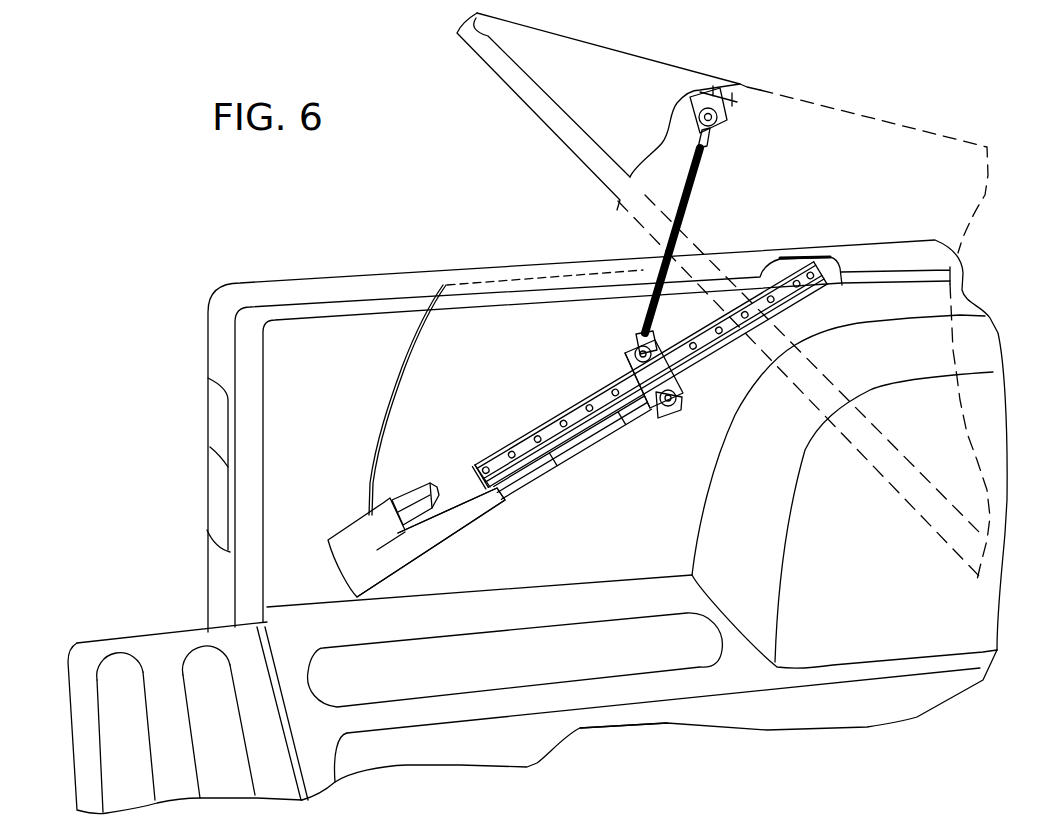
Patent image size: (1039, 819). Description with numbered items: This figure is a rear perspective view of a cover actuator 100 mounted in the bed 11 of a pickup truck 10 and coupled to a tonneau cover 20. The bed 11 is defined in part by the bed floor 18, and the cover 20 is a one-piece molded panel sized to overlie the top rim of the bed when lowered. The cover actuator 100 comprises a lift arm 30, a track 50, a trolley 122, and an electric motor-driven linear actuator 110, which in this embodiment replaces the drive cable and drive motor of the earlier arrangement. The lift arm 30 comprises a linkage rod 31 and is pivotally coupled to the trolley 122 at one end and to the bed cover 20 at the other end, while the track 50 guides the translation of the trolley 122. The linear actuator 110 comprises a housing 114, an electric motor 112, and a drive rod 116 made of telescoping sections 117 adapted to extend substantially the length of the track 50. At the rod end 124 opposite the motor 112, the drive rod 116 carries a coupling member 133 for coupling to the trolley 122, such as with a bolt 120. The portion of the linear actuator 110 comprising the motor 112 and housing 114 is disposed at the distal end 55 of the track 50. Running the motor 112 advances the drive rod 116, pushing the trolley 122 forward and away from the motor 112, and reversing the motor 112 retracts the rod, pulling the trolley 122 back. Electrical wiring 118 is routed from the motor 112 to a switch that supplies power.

The pickup truck 10 is at (219, 225).
The truck bed 11 is at (143, 361).
The bed floor 18 is at (442, 632).
The tonneau cover 20 is at (573, 53).
The lift arm 30 is at (660, 189).
The linkage rod 31 is at (695, 188).
The track 50 is at (578, 407).
The distal end 55 is at (475, 465).
The cover actuator 100 is at (597, 614).
The linear actuator 110 is at (352, 512).
The electric motor 112 is at (408, 493).
The housing 114 is at (433, 553).
The drive rod 116 is at (507, 503).
The telescoping sections 117 is at (536, 477).
The electrical wiring 118 is at (380, 418).
The bolt 120 is at (682, 400).
The trolley 122 is at (661, 410).
The rod end 124 is at (684, 378).
The coupling member 133 is at (668, 406).